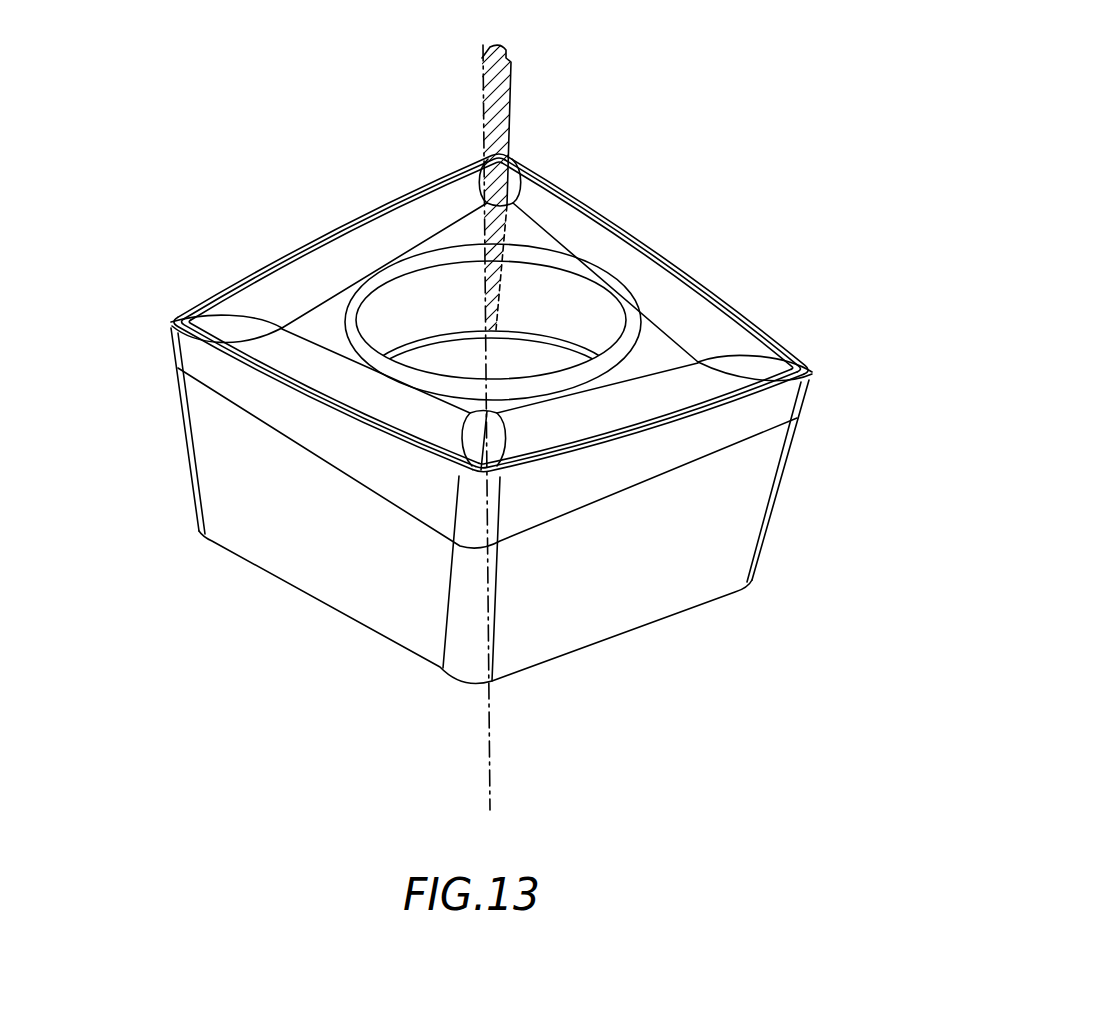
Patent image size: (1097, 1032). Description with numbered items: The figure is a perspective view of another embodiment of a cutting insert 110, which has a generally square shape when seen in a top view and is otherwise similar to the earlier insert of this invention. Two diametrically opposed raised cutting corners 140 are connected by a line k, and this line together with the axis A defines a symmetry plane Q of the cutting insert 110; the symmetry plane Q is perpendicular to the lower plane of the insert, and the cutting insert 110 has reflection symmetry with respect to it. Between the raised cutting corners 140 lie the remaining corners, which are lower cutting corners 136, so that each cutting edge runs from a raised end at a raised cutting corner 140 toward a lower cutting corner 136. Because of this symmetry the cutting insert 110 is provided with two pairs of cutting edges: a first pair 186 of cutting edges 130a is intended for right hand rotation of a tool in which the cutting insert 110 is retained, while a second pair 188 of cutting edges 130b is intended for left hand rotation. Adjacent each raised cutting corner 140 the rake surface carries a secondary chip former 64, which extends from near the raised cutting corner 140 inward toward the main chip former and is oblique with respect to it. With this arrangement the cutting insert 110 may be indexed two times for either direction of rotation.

The cutting insert 110 is at (782, 115).
The cutting edges 130a is at (622, 224).
The cutting edges 130b is at (350, 221).
The lower cutting corner 136 is at (169, 321).
The raised cutting corners 140 is at (505, 157).
The first pair of cutting edges 186 is at (696, 279).
The second pair of cutting edges 188 is at (418, 188).
The secondary chip former 64 is at (465, 424).
The axis A is at (482, 117).
The symmetry plane Q is at (508, 72).
The line k is at (502, 232).